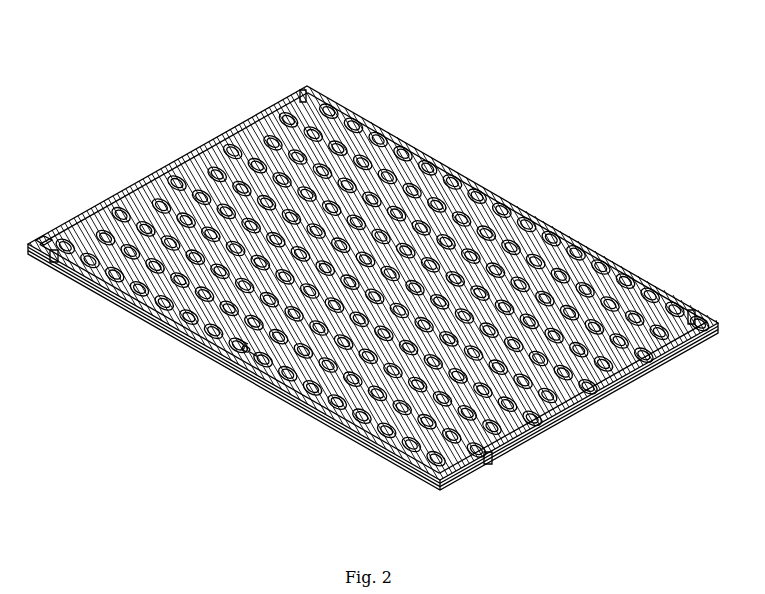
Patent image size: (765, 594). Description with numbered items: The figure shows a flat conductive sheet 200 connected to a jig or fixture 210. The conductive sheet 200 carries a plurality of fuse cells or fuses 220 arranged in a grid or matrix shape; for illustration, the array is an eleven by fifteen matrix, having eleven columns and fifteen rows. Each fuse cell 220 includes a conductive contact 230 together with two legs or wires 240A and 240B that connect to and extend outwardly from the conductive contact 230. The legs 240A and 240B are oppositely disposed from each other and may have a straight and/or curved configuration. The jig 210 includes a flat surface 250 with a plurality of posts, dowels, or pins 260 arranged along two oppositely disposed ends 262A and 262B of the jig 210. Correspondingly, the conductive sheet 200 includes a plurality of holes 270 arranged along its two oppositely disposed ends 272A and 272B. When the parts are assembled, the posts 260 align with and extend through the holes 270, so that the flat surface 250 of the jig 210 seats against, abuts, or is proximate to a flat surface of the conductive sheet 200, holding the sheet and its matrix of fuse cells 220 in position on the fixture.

The flat conductive sheet 200 is at (382, 142).
The jig 210 is at (328, 103).
The fuse cells 220 is at (495, 202).
The conductive contact 230 is at (243, 348).
The leg 240A is at (243, 342).
The leg 240B is at (252, 355).
The flat surface 250 is at (43, 243).
The posts 260 is at (298, 80).
The end of the jig 262A is at (238, 117).
The end of the jig 262B is at (650, 372).
The holes 270 is at (55, 252).
The end of the conductive sheet 272A is at (172, 177).
The end of the conductive sheet 272B is at (570, 405).